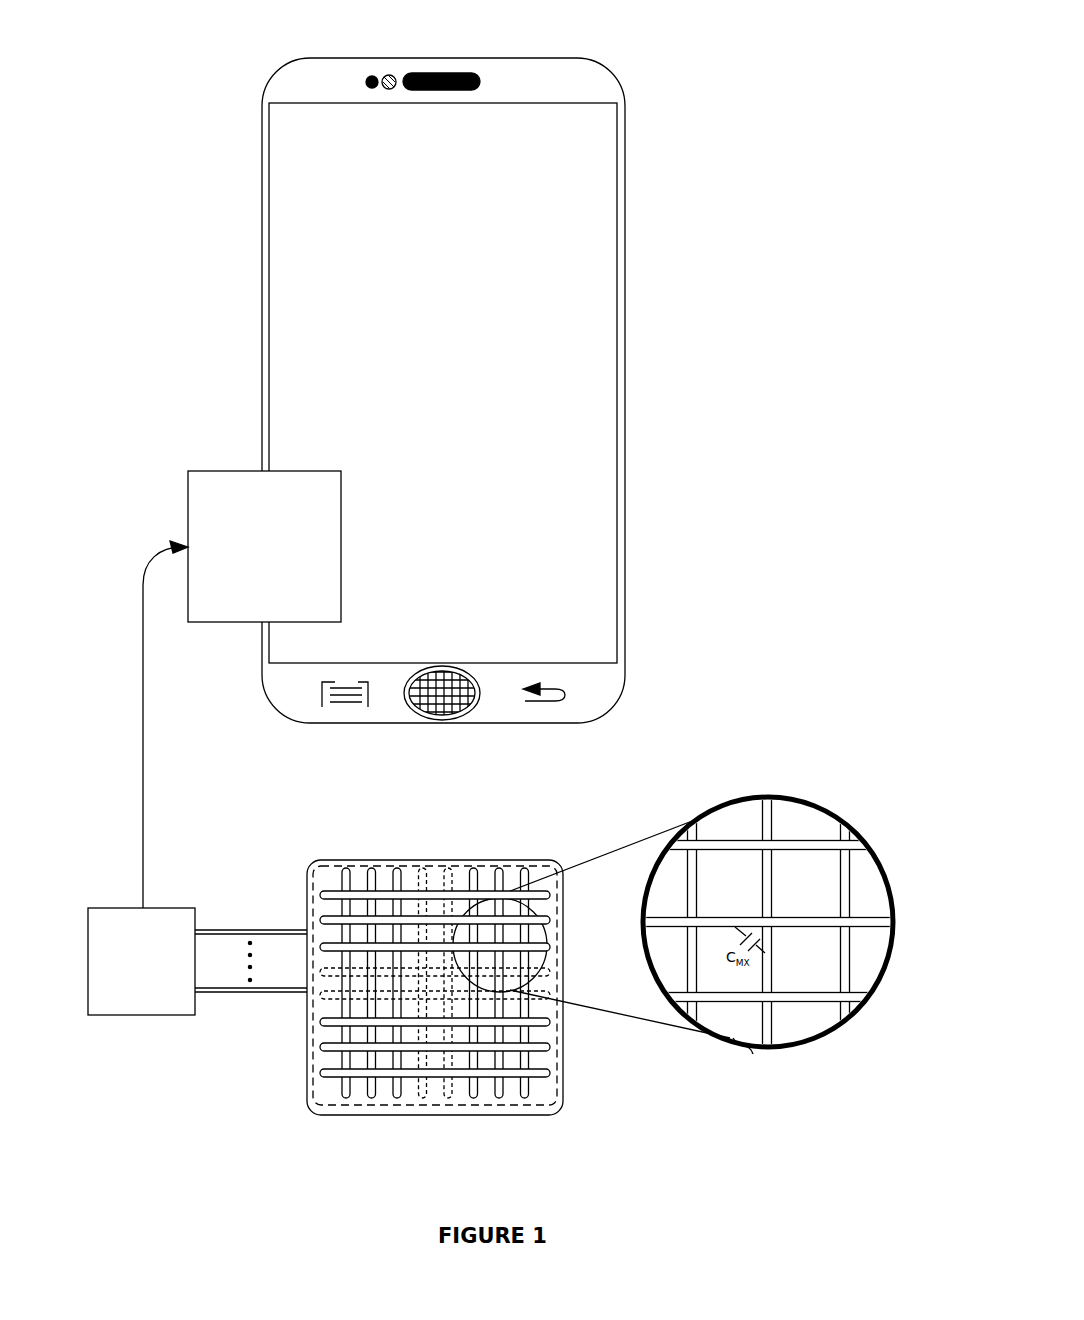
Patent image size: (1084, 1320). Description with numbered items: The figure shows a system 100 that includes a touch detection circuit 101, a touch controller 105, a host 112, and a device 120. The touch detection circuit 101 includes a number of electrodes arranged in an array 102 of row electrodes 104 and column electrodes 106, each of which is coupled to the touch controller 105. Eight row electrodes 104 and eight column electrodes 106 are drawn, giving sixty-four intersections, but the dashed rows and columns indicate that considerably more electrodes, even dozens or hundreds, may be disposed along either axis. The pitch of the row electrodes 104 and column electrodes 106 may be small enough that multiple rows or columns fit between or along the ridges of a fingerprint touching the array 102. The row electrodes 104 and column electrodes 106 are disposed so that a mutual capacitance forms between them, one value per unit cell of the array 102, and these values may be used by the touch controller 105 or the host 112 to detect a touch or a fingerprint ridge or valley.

The system 100 is at (927, 82).
The touch detection circuit 101 is at (548, 792).
The device 120 is at (455, 356).
The host 112 is at (250, 567).
The touch controller 105 is at (126, 994).
The array 102 is at (560, 1080).
The row electrodes 104 is at (550, 1047).
The column electrodes 106 is at (530, 1098).